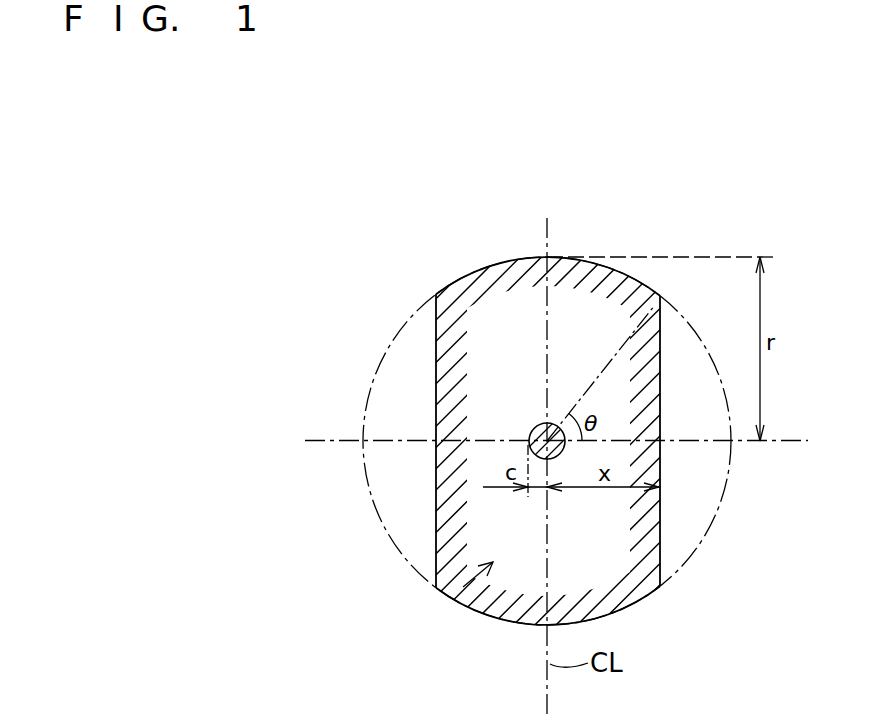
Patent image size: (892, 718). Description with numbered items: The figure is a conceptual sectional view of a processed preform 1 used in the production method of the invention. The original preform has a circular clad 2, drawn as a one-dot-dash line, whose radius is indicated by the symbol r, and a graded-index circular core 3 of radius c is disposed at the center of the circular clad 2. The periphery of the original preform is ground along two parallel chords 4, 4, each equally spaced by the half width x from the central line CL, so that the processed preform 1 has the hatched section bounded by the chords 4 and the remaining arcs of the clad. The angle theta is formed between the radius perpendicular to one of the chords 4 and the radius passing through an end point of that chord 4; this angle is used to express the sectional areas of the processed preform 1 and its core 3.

The processed preform 1 is at (444, 597).
The circular clad 2 is at (466, 276).
The graded-index circular core 3 is at (533, 432).
The parallel chords 4 is at (436, 528).